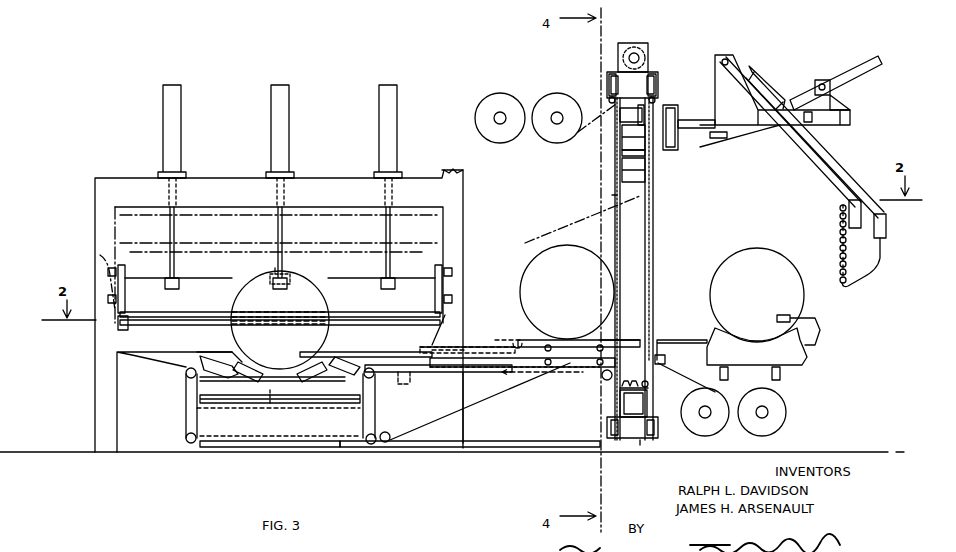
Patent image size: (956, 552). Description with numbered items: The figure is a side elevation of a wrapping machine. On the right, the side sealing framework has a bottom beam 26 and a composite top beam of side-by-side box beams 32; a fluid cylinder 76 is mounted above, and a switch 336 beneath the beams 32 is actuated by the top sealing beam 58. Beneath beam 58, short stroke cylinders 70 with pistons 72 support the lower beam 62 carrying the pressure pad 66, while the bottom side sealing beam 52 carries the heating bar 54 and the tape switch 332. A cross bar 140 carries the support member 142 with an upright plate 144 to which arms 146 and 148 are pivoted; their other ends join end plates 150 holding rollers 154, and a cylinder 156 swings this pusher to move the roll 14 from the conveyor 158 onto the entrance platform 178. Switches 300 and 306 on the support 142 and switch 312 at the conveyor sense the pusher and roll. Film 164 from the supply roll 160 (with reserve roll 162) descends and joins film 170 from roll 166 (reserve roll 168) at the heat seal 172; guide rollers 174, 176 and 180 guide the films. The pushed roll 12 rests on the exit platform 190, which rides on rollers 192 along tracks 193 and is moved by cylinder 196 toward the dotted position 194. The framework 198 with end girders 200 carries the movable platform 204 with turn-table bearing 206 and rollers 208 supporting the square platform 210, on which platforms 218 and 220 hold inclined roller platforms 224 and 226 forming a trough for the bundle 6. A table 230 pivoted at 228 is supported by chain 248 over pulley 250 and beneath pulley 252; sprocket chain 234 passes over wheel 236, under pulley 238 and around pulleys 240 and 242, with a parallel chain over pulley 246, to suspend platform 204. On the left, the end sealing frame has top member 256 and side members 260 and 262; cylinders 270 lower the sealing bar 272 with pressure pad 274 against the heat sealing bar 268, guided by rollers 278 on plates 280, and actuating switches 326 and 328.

The bundle of cloth 6 is at (325, 308).
The succeeding roll 12 is at (588, 258).
The still succeeding roll 14 is at (776, 248).
The bottom beam 26 is at (660, 434).
The side-by-side box beams 32 is at (608, 82).
The bottom side sealing beam 52 is at (648, 406).
The heating bar 54 is at (624, 384).
The top sealing beam 58 is at (646, 148).
The lower beam 62 is at (646, 180).
The pressure pad 66 is at (616, 196).
The short stroke cylinders 70 is at (620, 116).
The pistons 72 is at (618, 153).
The fluid cylinder 76 is at (638, 43).
The cross bar 140 is at (669, 106).
The support member 142 is at (692, 110).
The upright plate 144 is at (744, 60).
The arm 146 is at (750, 93).
The arm 148 is at (770, 86).
The end plates 150 is at (860, 264).
The rollers 154 is at (840, 222).
The cylinder 156 is at (852, 62).
The conveyor 158 is at (790, 342).
The supply roll 160 is at (558, 95).
The reserve supply roll 162 is at (503, 97).
The film 164 is at (608, 108).
The roll 166 is at (708, 435).
The reserve supply roll 168 is at (766, 435).
The film 170 is at (652, 308).
The heat seal 172 is at (652, 289).
The guide roller 174 is at (652, 192).
The guide roller 176 is at (668, 360).
The entrance platform 178 is at (674, 340).
The guide roller 180 is at (648, 384).
The exit platform 190 is at (604, 340).
The rollers 192 is at (550, 376).
The tracks 193 is at (568, 344).
The dotted-line position 194 is at (486, 340).
The fluid-operated cylinder 196 is at (508, 380).
The framework 198 is at (506, 447).
The end girders 200 is at (185, 417).
The movable platform 204 is at (212, 406).
The turn-table bearing 206 is at (270, 404).
The rollers 208 is at (336, 418).
The square platform 210 is at (356, 363).
The platform 218 is at (192, 343).
The platform 220 is at (392, 353).
The inclined roller-type platform 224 is at (249, 350).
The inclined roller-type platform 226 is at (324, 352).
The pivot point 228 is at (506, 368).
The table 230 is at (476, 346).
The sprocket chain 234 is at (592, 406).
The wheel 236 is at (590, 386).
The pulley 238 is at (368, 446).
The pulley 240 is at (186, 437).
The pulley 242 is at (186, 375).
The pulley 246 is at (380, 390).
The chain 248 is at (296, 448).
The pulley 250 is at (404, 382).
The pulley 252 is at (392, 440).
The top member 256 is at (238, 178).
The side member 260 is at (95, 223).
The side member 262 is at (463, 212).
The heat sealing bar 268 is at (147, 330).
The fluid-operated cylinders 270 is at (351, 101).
The top movable sealing bar 272 is at (277, 265).
The pressure pad 274 is at (165, 314).
The rollers 278 is at (99, 258).
The plates 280 is at (125, 274).
The switch 300 is at (718, 140).
The switch 306 is at (814, 119).
The switch 312 is at (780, 316).
The switch 326 is at (112, 331).
The switch 328 is at (448, 316).
The tape switch 332 is at (640, 440).
The switch 336 is at (632, 87).